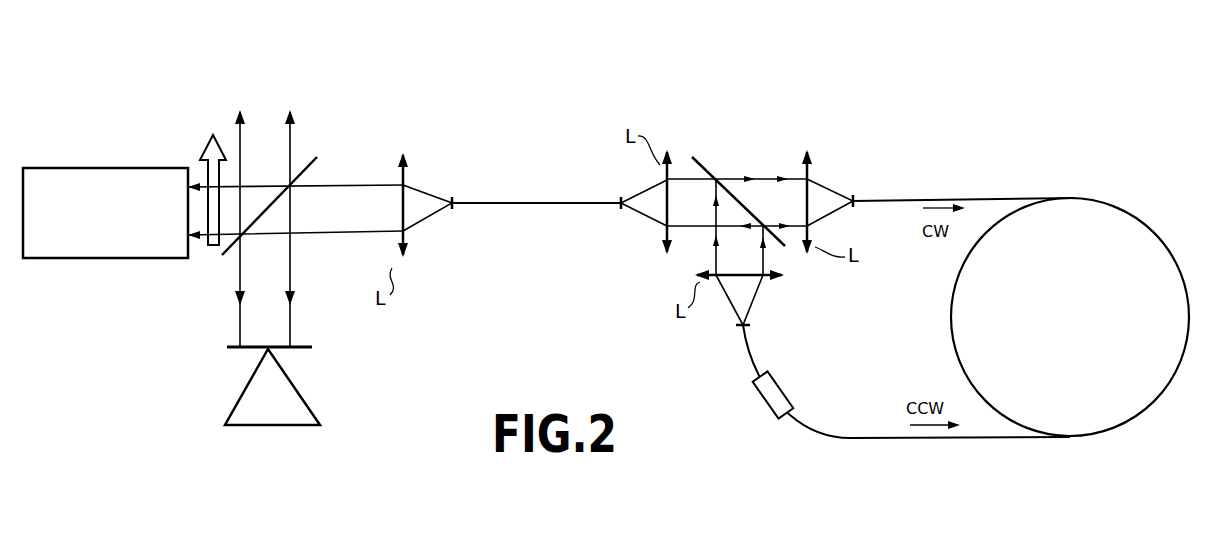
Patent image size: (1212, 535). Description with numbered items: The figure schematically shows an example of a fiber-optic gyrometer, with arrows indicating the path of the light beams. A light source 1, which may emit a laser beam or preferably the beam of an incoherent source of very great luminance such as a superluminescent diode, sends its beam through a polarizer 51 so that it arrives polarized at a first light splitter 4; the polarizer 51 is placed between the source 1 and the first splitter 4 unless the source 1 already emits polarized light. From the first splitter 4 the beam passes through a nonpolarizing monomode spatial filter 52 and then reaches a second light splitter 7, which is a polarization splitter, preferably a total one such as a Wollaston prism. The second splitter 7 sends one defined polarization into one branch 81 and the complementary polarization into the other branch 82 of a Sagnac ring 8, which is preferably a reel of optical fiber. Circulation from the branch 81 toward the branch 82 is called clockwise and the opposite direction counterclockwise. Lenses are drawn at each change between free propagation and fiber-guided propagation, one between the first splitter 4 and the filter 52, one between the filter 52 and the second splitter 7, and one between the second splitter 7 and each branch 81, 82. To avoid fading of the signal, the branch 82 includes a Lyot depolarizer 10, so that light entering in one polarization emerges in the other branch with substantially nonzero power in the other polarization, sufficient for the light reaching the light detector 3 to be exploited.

The light source 1 is at (117, 247).
The light detector 3 is at (298, 402).
The first light splitter 4 is at (310, 165).
The polarizer 51 is at (211, 150).
The nonpolarizing monomode spatial filter 52 is at (548, 205).
The second light splitter 7 is at (703, 172).
The first branch of the Sagnac ring 81 is at (890, 196).
The second branch of the Sagnac ring 82 is at (752, 358).
The Lyot depolarizer 10 is at (758, 397).
The Sagnac ring 8 is at (1160, 395).